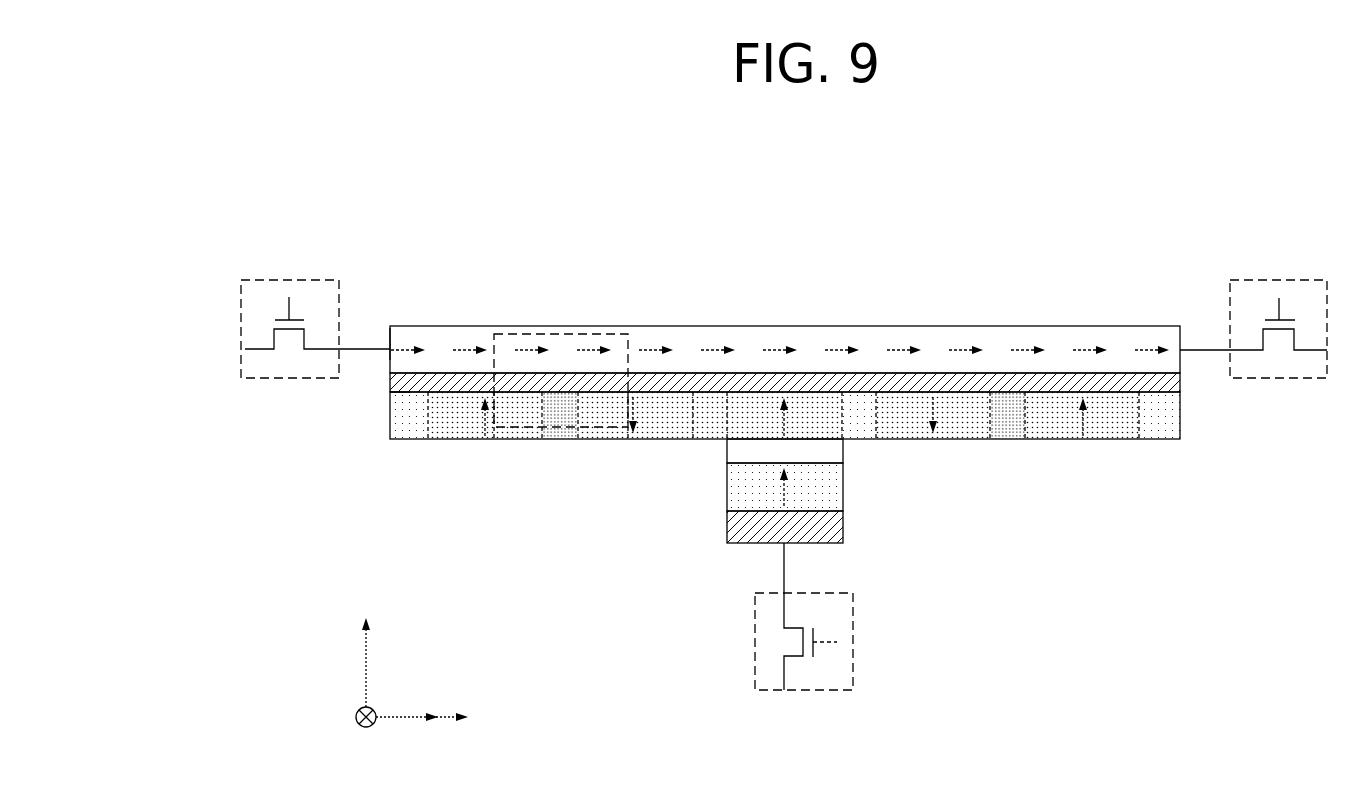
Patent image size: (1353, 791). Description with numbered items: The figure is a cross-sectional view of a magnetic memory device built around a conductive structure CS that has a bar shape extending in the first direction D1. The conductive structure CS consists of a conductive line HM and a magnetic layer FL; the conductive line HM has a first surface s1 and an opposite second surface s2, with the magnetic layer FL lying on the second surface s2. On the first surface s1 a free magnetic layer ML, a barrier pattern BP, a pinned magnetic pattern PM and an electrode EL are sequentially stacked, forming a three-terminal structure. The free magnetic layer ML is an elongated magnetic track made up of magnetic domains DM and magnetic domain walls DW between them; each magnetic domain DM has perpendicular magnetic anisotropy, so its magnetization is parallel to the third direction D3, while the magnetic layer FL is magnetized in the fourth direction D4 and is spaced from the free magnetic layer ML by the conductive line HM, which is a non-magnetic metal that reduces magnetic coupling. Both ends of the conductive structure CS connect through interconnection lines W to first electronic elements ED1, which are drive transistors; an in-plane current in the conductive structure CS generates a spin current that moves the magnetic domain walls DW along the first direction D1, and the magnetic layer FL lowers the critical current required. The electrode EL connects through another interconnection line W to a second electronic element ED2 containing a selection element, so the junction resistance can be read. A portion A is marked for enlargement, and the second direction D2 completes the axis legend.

The first electronic element ED1 is at (268, 280).
The second electronic element ED2 is at (853, 665).
The interconnection line W is at (362, 348).
The portion A is at (558, 334).
The conductive structure CS is at (785, 296).
The magnetic layer FL is at (1058, 335).
The conductive line HM is at (1120, 391).
The free magnetic layer ML is at (849, 419).
The magnetic domain DM is at (1128, 418).
The magnetic domain wall DW is at (1168, 405).
The first surface s1 is at (408, 393).
The second surface s2 is at (405, 359).
The barrier pattern BP is at (830, 452).
The pinned magnetic pattern PM is at (830, 488).
The electrode EL is at (832, 524).
The first direction D1 is at (436, 719).
The second direction D2 is at (365, 732).
The third direction D3 is at (365, 648).
The fourth direction D4 is at (431, 735).